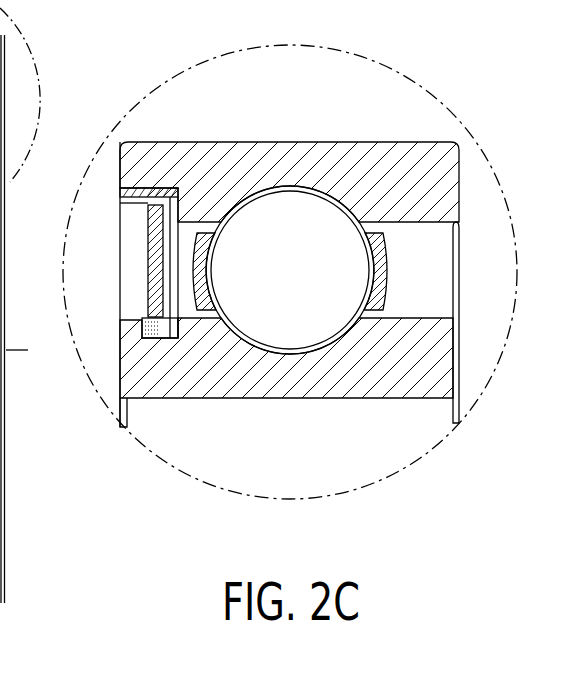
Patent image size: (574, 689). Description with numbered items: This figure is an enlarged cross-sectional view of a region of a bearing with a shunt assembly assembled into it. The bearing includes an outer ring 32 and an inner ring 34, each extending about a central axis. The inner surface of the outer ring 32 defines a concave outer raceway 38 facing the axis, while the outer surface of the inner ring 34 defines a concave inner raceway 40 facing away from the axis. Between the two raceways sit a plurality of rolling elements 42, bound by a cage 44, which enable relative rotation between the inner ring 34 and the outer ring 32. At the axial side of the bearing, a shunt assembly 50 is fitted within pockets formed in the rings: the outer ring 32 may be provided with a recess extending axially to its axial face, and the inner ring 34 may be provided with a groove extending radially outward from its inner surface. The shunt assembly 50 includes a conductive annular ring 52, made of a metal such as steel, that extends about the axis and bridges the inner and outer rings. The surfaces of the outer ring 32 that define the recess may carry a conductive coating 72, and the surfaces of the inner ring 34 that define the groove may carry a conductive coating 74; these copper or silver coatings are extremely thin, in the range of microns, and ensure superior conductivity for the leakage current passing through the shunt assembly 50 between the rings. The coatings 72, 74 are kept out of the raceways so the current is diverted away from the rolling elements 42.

The outer ring 32 is at (412, 155).
The inner ring 34 is at (422, 358).
The outer raceway 38 is at (305, 185).
The inner raceway 40 is at (288, 352).
The rolling elements 42 is at (290, 268).
The cage 44 is at (385, 258).
The shunt assembly 50 is at (287, 344).
The annular ring 52 is at (140, 192).
The conductive coating 72 is at (145, 192).
The conductive coating 74 is at (172, 343).